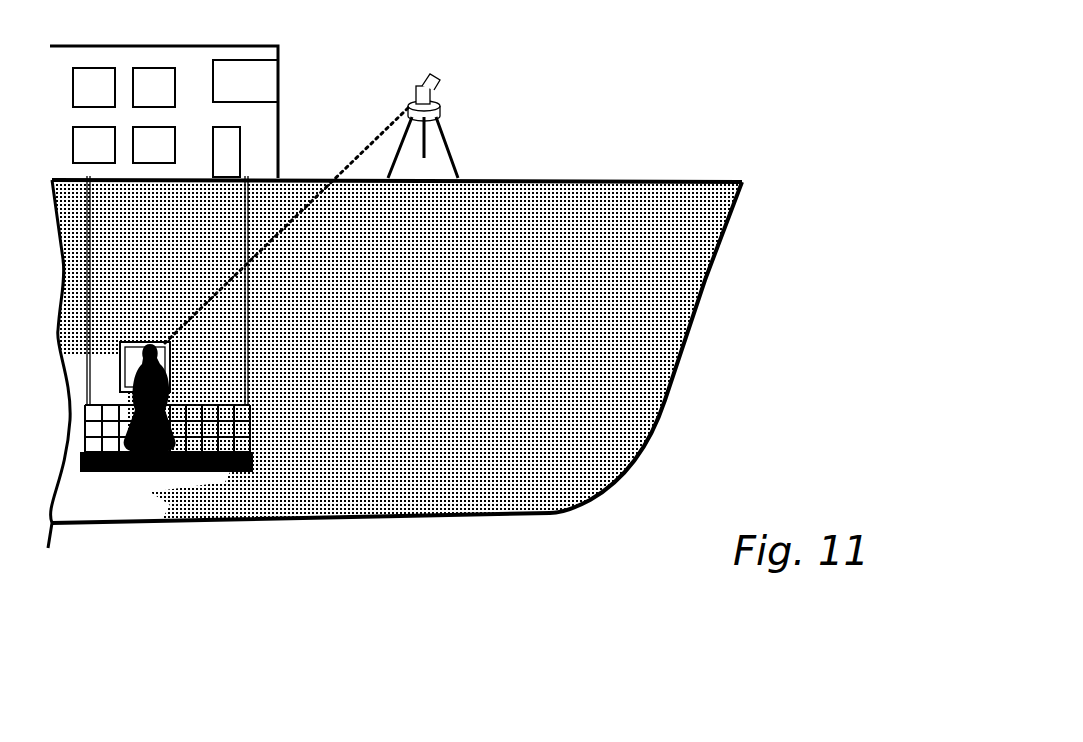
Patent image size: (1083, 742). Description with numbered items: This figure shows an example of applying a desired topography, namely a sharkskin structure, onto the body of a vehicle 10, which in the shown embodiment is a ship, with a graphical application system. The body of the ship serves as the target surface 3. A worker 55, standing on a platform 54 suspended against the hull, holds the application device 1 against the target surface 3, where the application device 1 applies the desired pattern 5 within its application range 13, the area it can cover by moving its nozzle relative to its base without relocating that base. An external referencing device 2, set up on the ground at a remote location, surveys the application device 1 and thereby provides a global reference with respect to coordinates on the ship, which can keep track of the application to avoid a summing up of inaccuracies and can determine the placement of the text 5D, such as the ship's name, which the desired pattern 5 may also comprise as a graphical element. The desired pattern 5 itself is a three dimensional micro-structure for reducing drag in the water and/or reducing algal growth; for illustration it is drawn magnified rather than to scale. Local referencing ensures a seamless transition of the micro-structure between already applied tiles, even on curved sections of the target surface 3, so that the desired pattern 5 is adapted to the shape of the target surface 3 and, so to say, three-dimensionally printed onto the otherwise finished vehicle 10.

The application device 1 is at (130, 345).
The application range 13 is at (165, 345).
The external referencing device 2 is at (440, 107).
The target surface 3 is at (472, 248).
The desired pattern 5 is at (435, 463).
The text 5D is at (598, 225).
The vehicle 10 is at (730, 164).
The working platform 54 is at (115, 472).
The worker 55 is at (200, 472).